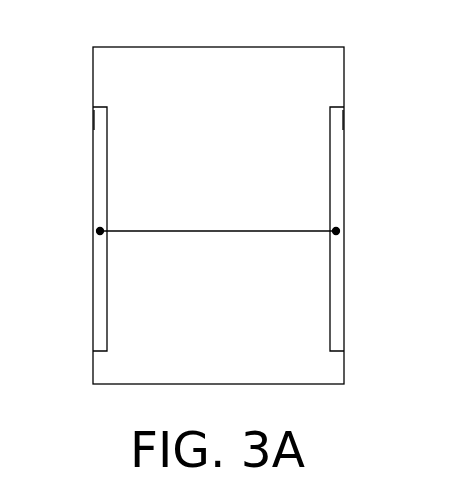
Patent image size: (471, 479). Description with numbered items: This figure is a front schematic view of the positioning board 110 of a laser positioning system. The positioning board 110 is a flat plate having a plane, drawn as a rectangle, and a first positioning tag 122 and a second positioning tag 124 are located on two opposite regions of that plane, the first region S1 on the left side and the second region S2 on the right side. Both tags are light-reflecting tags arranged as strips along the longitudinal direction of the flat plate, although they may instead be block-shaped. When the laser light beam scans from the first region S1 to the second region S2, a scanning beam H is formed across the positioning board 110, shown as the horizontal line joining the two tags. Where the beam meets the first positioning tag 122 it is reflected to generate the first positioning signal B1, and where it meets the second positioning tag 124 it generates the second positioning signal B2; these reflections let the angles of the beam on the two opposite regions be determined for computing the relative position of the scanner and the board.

The positioning board 110 is at (248, 47).
The first positioning tag 122 is at (100, 189).
The second positioning tag 124 is at (337, 173).
The first region S1 is at (78, 118).
The second region S2 is at (357, 128).
The scanning beam H is at (218, 231).
The first positioning signal B1 is at (83, 232).
The second positioning signal B2 is at (356, 232).